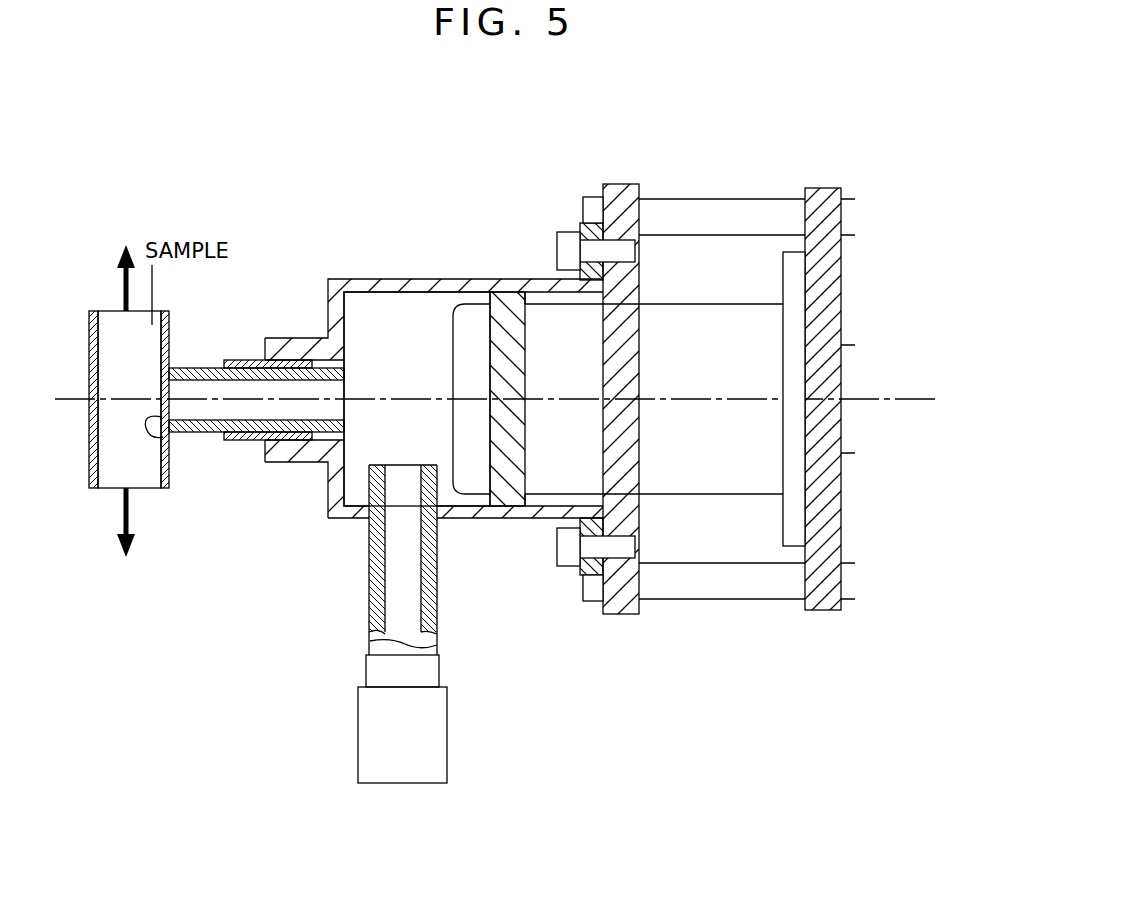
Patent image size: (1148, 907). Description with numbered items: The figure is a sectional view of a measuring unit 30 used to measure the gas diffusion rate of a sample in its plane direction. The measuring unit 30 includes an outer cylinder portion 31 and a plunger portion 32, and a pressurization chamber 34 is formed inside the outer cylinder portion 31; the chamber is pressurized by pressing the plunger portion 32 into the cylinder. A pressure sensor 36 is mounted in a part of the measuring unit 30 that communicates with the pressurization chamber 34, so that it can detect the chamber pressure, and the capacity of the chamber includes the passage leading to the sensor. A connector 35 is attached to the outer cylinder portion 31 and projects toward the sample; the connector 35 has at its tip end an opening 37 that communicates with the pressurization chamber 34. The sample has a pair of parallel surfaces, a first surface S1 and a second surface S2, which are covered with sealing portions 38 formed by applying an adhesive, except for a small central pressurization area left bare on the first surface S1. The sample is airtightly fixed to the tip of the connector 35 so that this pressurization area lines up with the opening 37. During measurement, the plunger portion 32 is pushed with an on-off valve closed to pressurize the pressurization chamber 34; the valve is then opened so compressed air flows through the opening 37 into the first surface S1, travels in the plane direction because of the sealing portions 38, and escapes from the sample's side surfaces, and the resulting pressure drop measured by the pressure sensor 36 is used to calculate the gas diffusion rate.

The measuring unit 30 is at (271, 118).
The outer cylinder portion 31 is at (469, 285).
The plunger portion 32 is at (694, 472).
The pressurization chamber 34 is at (385, 313).
The connector 35 is at (205, 370).
The pressure sensor 36 is at (447, 730).
The opening 37 is at (168, 440).
The sealing portions 38 is at (91, 330).
The first surface S1 is at (168, 475).
The second surface S2 is at (90, 475).